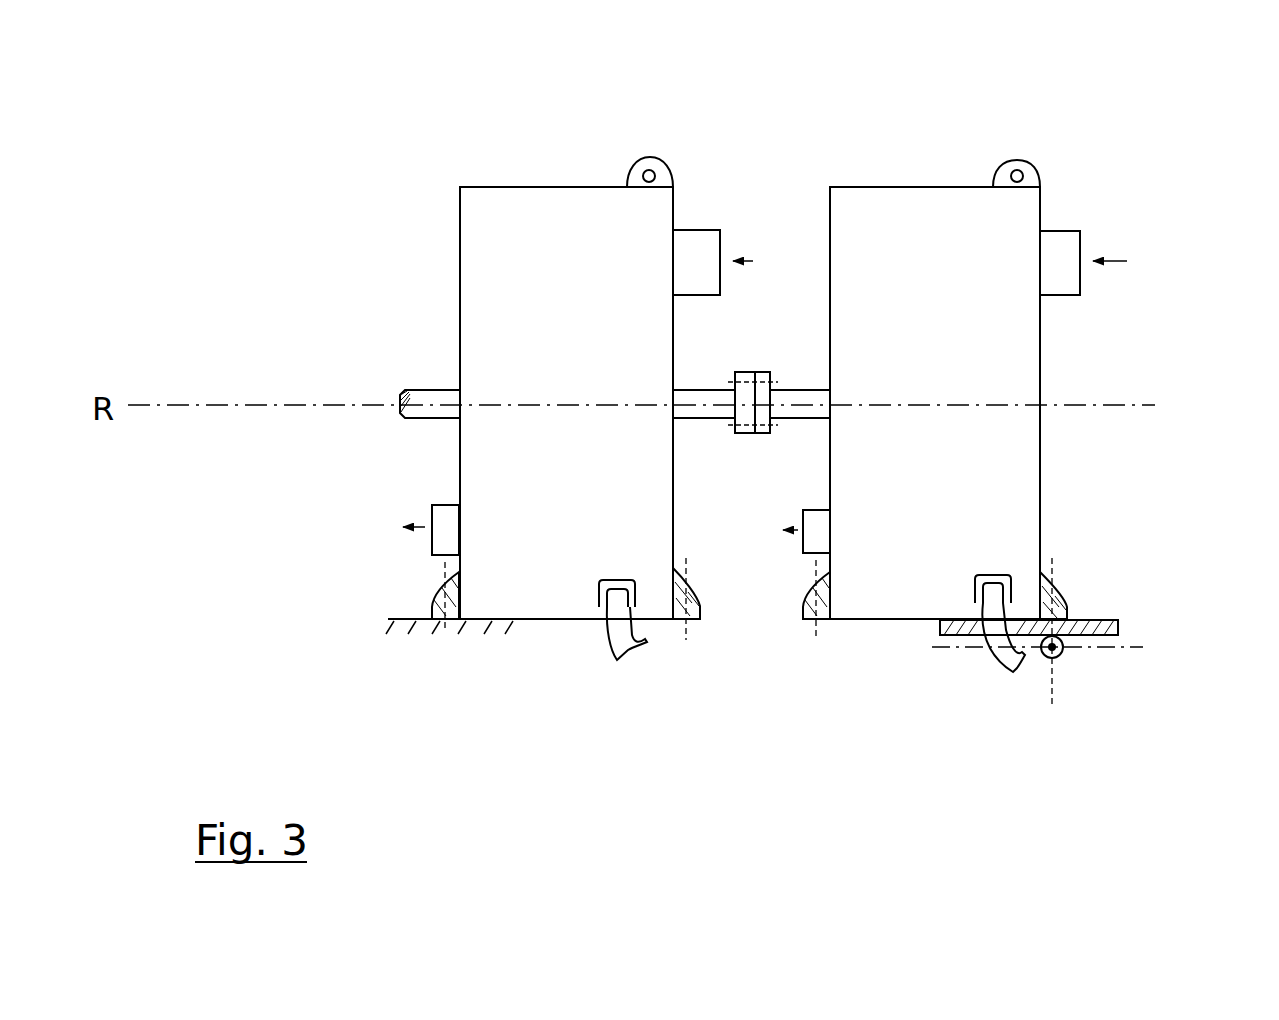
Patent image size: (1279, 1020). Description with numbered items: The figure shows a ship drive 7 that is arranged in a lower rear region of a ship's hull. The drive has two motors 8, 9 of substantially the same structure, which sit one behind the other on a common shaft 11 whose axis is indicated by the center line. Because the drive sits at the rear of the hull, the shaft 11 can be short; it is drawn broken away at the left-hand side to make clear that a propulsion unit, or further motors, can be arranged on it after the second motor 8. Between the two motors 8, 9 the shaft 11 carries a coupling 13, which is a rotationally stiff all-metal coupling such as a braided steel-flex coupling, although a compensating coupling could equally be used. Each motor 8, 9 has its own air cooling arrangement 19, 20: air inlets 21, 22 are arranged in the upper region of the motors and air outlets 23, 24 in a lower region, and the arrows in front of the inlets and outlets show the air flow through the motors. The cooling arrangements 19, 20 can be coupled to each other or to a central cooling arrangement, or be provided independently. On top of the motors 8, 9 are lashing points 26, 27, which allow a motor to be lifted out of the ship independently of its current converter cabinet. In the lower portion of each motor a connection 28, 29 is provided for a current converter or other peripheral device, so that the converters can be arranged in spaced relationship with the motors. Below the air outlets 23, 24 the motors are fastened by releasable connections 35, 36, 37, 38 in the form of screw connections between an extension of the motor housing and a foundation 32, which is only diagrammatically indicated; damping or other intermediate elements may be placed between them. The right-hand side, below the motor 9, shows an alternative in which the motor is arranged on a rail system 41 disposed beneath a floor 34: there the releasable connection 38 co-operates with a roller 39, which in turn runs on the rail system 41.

The ship drive 7 is at (225, 170).
The motor 8 is at (503, 177).
The motor 9 is at (849, 177).
The shaft 11 is at (418, 380).
The coupling 13 is at (748, 363).
The cooling arrangement 19 is at (704, 200).
The cooling arrangement 20 is at (1062, 203).
The air inlet 21 is at (720, 237).
The air inlet 22 is at (1083, 243).
The air outlet 23 is at (440, 505).
The air outlet 24 is at (803, 553).
The lashing point 26 is at (633, 152).
The lashing point 27 is at (1000, 163).
The connection 28 is at (597, 646).
The connection 29 is at (975, 656).
The foundation 32 is at (418, 648).
The floor 34 is at (1113, 612).
The releasable connection 35 is at (432, 593).
The releasable connection 36 is at (704, 592).
The releasable connection 37 is at (802, 592).
The releasable connection 38 is at (1068, 588).
The roller 39 is at (1045, 666).
The rail system 41 is at (1098, 661).